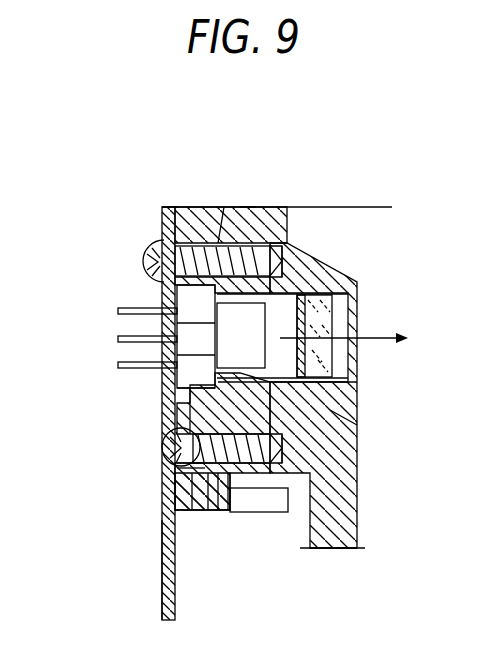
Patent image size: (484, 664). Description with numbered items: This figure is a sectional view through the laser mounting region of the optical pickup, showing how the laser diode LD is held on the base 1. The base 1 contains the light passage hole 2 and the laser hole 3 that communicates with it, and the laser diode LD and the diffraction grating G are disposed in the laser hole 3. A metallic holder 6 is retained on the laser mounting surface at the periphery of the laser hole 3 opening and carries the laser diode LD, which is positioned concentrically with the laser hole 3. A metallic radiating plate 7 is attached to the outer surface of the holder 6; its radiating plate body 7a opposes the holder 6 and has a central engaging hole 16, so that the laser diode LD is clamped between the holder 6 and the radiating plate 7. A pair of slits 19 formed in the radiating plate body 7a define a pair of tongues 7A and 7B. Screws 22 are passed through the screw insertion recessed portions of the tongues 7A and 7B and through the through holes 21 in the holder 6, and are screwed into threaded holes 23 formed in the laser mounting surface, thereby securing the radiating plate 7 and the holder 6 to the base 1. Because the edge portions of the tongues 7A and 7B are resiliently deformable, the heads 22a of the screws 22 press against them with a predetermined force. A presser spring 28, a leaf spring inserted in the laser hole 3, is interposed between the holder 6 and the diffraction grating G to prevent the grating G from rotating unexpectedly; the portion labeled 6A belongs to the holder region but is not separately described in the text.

The base 1 is at (336, 560).
The light passage hole 2 is at (430, 400).
The laser hole 3 is at (305, 290).
The holder 6 is at (204, 198).
The plate portion 6A is at (247, 208).
The radiating plate 7 is at (152, 585).
The radiating plate body 7a is at (162, 565).
The tongue 7A is at (164, 217).
The tongue 7B is at (193, 490).
The engaging hole 16 is at (172, 307).
The slits 19 is at (176, 466).
The through holes 21 is at (218, 243).
The screws 22 is at (134, 258).
The heads of the screws 22a is at (153, 250).
The threaded holes 23 is at (287, 248).
The presser spring 28 is at (335, 413).
The diffraction grating G is at (342, 292).
The laser diode LD is at (185, 346).